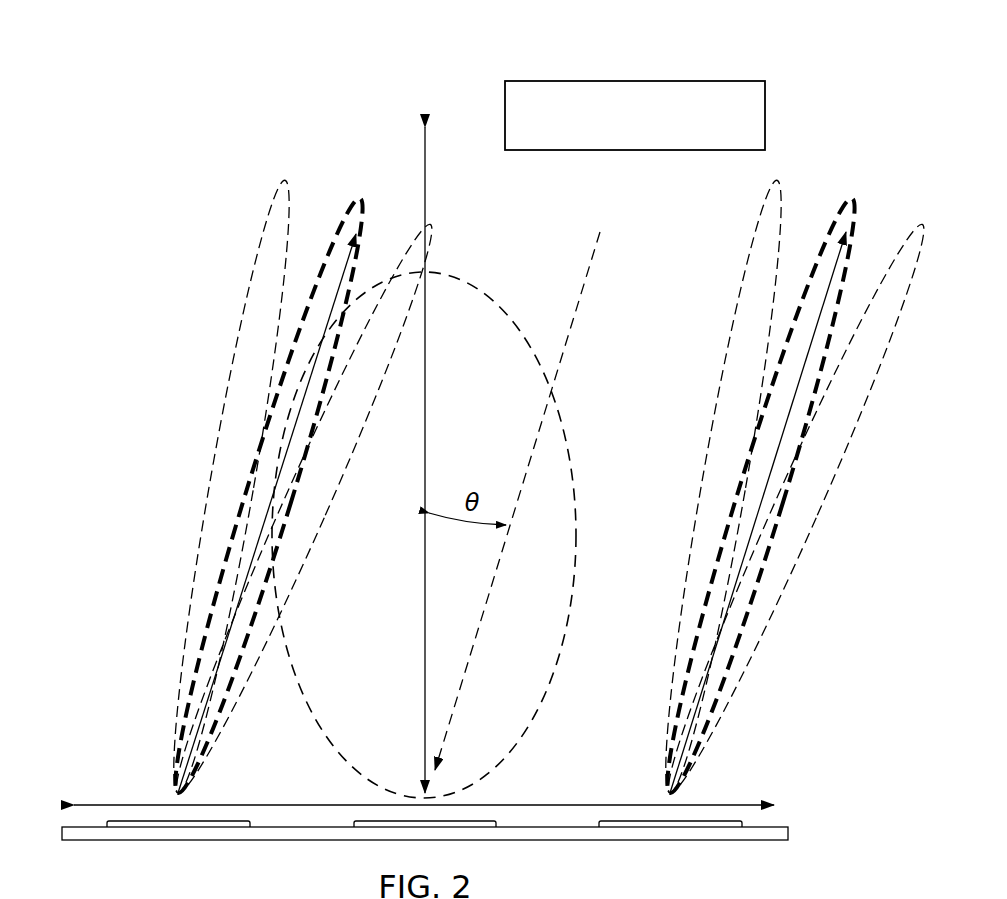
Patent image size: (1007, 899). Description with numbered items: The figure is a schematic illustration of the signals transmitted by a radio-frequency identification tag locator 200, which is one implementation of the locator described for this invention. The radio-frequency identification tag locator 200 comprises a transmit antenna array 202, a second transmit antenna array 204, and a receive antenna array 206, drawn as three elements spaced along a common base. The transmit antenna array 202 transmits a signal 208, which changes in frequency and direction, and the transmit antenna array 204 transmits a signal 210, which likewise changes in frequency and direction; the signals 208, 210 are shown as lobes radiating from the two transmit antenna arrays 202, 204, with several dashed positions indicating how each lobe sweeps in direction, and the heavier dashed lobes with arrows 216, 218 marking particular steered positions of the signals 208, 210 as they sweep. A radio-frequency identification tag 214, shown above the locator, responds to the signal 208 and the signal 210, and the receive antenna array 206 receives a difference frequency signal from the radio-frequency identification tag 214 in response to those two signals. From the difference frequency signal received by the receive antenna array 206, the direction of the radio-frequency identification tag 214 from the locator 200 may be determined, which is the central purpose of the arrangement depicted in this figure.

The radio-frequency identification tag locator 200 is at (790, 834).
The transmit antenna array 202 is at (107, 826).
The transmit antenna array 204 is at (742, 824).
The receive antenna array 206 is at (497, 824).
The signal 208 is at (206, 366).
The signal 210 is at (866, 486).
The radio-frequency identification tag 214 is at (636, 81).
The first steered beam 216 is at (347, 212).
The second steered beam 218 is at (856, 228).